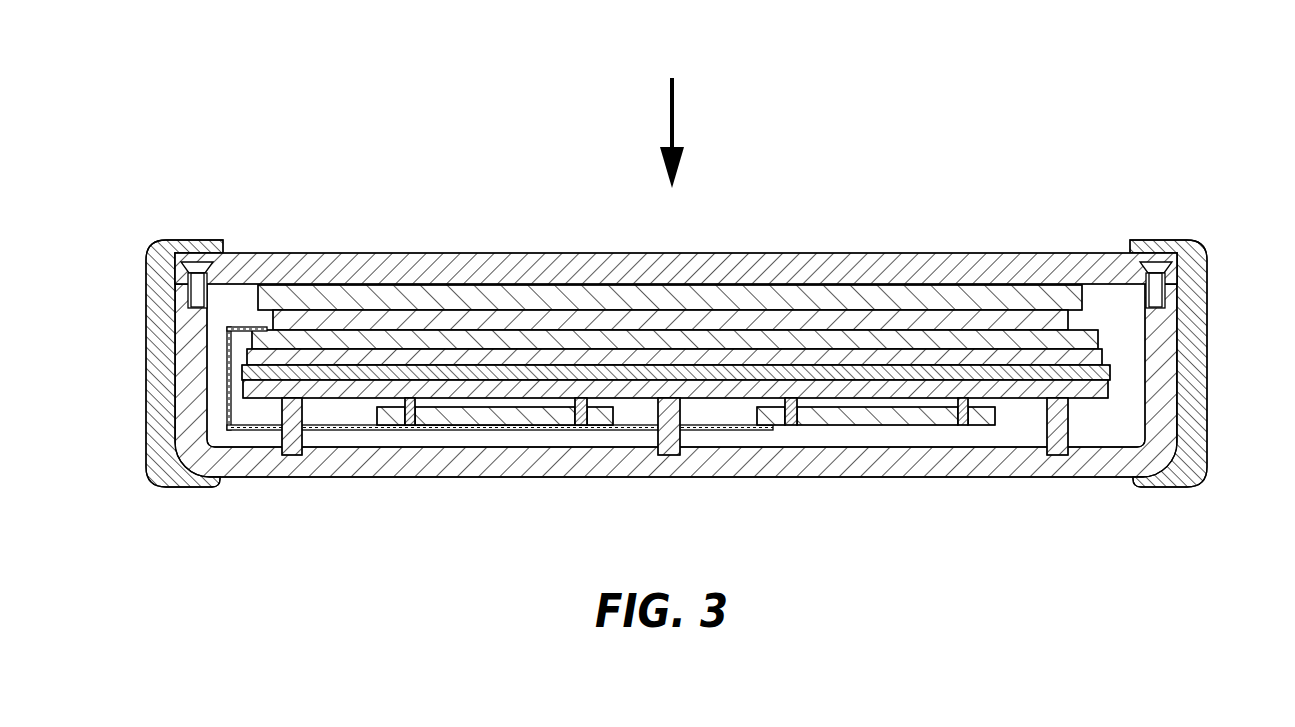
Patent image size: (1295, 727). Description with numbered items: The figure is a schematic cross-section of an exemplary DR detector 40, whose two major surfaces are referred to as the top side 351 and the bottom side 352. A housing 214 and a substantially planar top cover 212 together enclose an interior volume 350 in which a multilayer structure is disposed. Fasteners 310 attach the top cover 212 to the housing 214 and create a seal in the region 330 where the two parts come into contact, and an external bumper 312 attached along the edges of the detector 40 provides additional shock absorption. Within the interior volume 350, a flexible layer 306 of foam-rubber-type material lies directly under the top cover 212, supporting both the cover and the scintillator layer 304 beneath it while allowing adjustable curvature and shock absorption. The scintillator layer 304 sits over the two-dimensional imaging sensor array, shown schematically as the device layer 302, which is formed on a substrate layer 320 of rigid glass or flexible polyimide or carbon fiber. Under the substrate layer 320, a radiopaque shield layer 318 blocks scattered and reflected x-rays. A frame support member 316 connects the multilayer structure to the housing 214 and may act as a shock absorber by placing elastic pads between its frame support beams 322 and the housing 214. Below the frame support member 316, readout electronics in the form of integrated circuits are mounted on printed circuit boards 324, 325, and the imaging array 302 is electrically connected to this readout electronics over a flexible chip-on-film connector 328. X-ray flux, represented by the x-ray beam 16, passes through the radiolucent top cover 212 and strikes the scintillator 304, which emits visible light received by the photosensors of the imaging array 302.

The DR detector 40 is at (206, 110).
The x-ray beam 16 is at (672, 112).
The top side 351 is at (435, 166).
The bottom side 352 is at (397, 550).
The top cover 212 is at (1053, 268).
The housing 214 is at (1135, 462).
The external bumper 312 is at (1190, 402).
The fasteners 310 is at (197, 292).
The region 330 is at (217, 277).
The interior volume 350 is at (759, 370).
The flexible layer 306 is at (930, 292).
The scintillator layer 304 is at (820, 320).
The device layer 302 is at (725, 342).
The substrate layer 320 is at (747, 358).
The radiopaque shield layer 318 is at (877, 375).
The frame support member 316 is at (1017, 390).
The frame support beams 322 is at (293, 443).
The flexible connector 328 is at (242, 430).
The printed circuit board 324 is at (480, 416).
The printed circuit board 325 is at (932, 417).